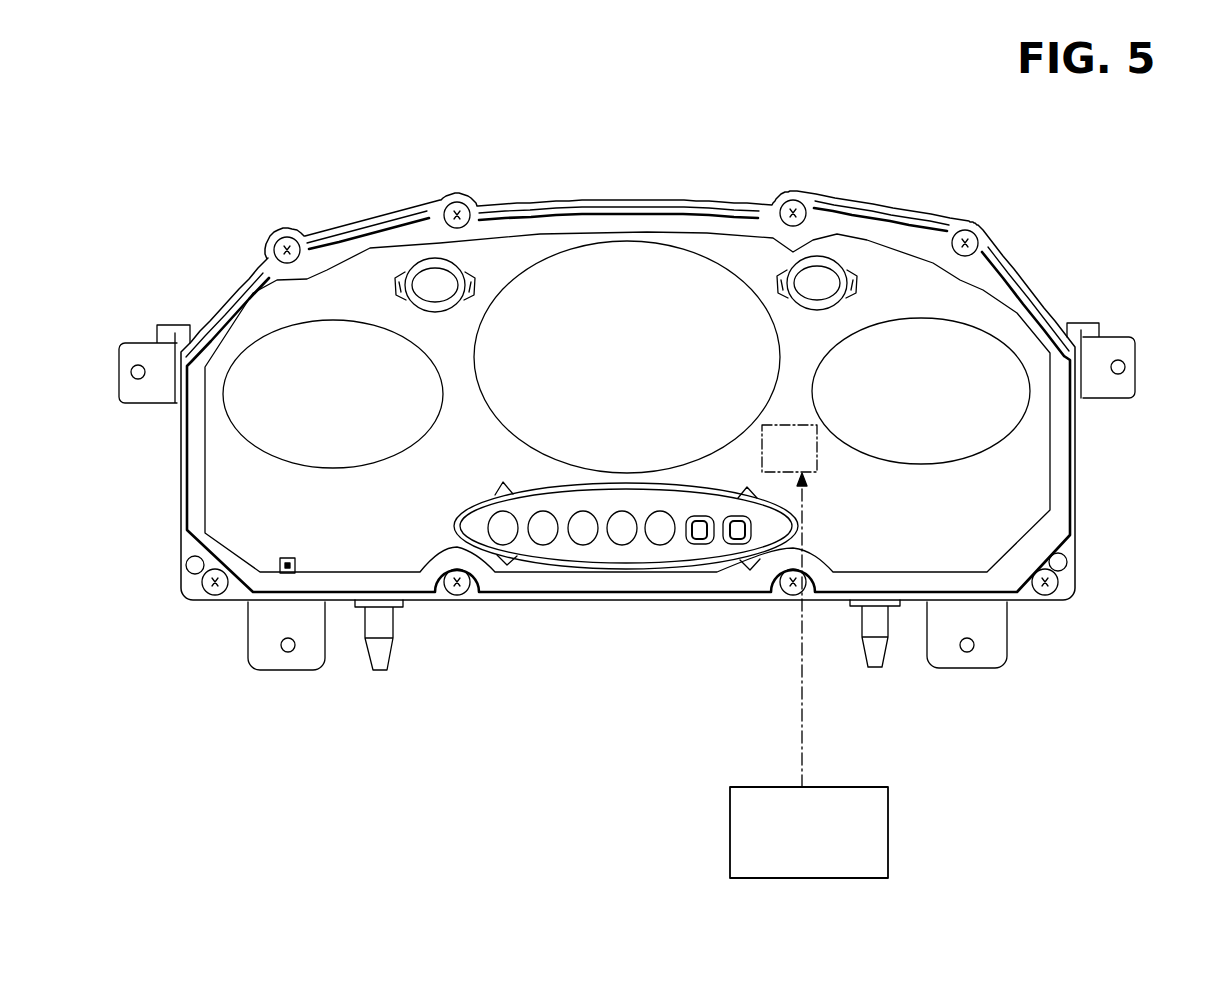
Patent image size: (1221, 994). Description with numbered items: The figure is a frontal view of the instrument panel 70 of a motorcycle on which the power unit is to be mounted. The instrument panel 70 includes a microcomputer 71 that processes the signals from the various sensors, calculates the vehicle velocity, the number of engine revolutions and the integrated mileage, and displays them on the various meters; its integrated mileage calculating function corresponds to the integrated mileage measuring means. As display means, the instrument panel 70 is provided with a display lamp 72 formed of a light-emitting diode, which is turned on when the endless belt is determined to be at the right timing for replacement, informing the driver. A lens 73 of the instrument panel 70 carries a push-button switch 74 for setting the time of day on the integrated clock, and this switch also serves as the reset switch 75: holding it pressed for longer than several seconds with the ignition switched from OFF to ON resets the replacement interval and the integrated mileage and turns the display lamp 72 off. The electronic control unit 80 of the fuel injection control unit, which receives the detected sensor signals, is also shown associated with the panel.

The instrument panel 70 is at (941, 167).
The microcomputer 71 is at (815, 453).
The display lamp 72 is at (620, 533).
The lens 73 is at (1010, 517).
The push-button switch 74 is at (735, 535).
The reset switch 75 is at (700, 530).
The electronic control unit 80 is at (888, 857).